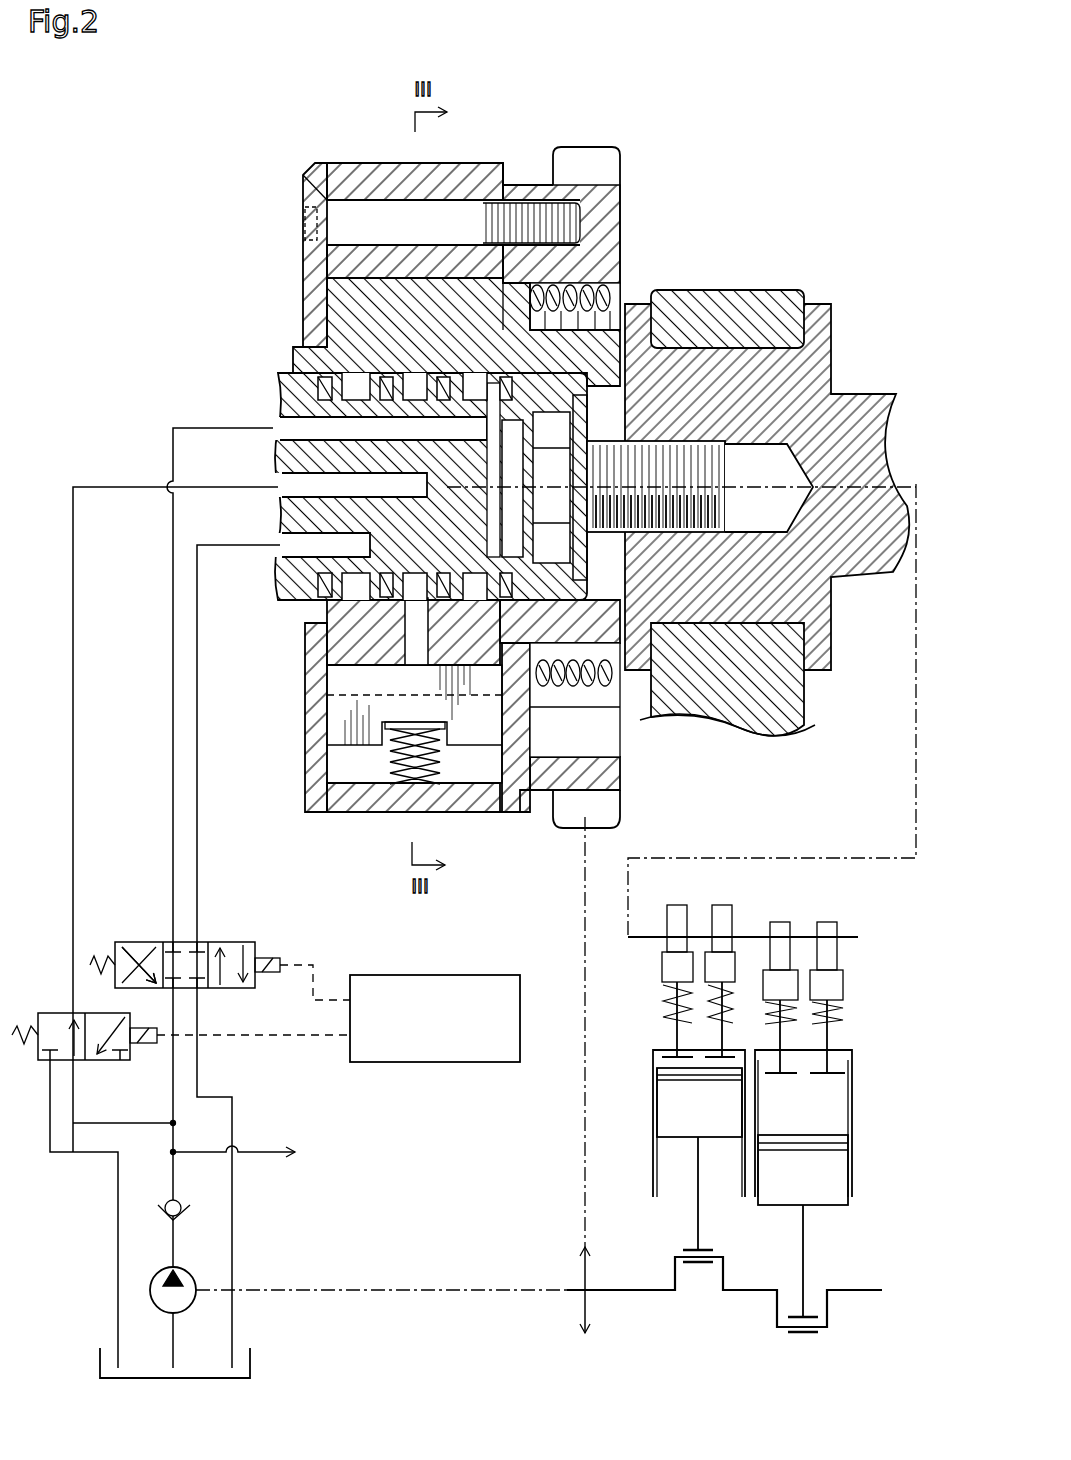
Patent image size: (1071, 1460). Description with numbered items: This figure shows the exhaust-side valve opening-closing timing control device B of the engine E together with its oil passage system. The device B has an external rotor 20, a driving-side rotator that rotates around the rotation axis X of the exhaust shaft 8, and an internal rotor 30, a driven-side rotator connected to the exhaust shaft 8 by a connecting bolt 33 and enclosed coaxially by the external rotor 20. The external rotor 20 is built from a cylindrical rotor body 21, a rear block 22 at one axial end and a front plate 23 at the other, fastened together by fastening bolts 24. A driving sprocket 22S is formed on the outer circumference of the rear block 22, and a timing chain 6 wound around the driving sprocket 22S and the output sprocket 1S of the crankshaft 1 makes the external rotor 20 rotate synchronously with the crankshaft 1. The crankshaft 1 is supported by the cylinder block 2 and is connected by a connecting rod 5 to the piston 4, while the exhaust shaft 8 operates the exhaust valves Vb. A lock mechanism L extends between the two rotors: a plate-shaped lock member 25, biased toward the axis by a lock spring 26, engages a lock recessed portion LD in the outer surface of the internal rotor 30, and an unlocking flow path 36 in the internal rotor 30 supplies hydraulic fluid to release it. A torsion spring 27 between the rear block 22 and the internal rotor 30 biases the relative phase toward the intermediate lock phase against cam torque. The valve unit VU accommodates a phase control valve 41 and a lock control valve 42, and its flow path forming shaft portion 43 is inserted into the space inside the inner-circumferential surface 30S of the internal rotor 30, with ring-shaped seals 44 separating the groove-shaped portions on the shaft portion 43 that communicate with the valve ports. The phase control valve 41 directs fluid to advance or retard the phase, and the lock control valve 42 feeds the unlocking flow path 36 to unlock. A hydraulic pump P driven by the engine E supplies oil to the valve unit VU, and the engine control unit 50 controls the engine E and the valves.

The engine E is at (824, 106).
The exhaust-side valve opening-closing timing control device B is at (298, 162).
The external rotor 20 is at (360, 160).
The rotor body 21 is at (450, 160).
The rear block 22 is at (620, 790).
The driving sprocket 22S is at (592, 150).
The front plate 23 is at (304, 648).
The fastening bolts 24 is at (304, 226).
The lock member 25 is at (368, 790).
The lock springs 26 is at (445, 756).
The torsion spring 27 is at (600, 300).
The internal rotor 30 is at (345, 300).
The inner-circumferential surface 30S is at (540, 383).
The connecting bolt 33 is at (722, 512).
The unlocking flow path 36 is at (420, 620).
The flow path forming shaft portion 43 is at (272, 398).
The ring-shaped seals 44 is at (332, 376).
The exhaust shaft 8 is at (852, 393).
The rotation axis X is at (845, 500).
The lock mechanism L is at (322, 735).
The lock recessed portions LD is at (327, 694).
The valve unit VU is at (231, 921).
The phase control valve 41 is at (144, 941).
The lock control valve 42 is at (50, 1012).
The engine control unit 50 is at (435, 1063).
The timing chain 6 is at (584, 950).
The hydraulic pump P is at (160, 1276).
The exhaust valve Vb is at (666, 1055).
The cylinder block 2 is at (652, 1160).
The piston 4 is at (654, 1101).
The connecting rod 5 is at (700, 1210).
The crankshaft 1 is at (626, 1289).
The output sprocket 1S is at (581, 1262).